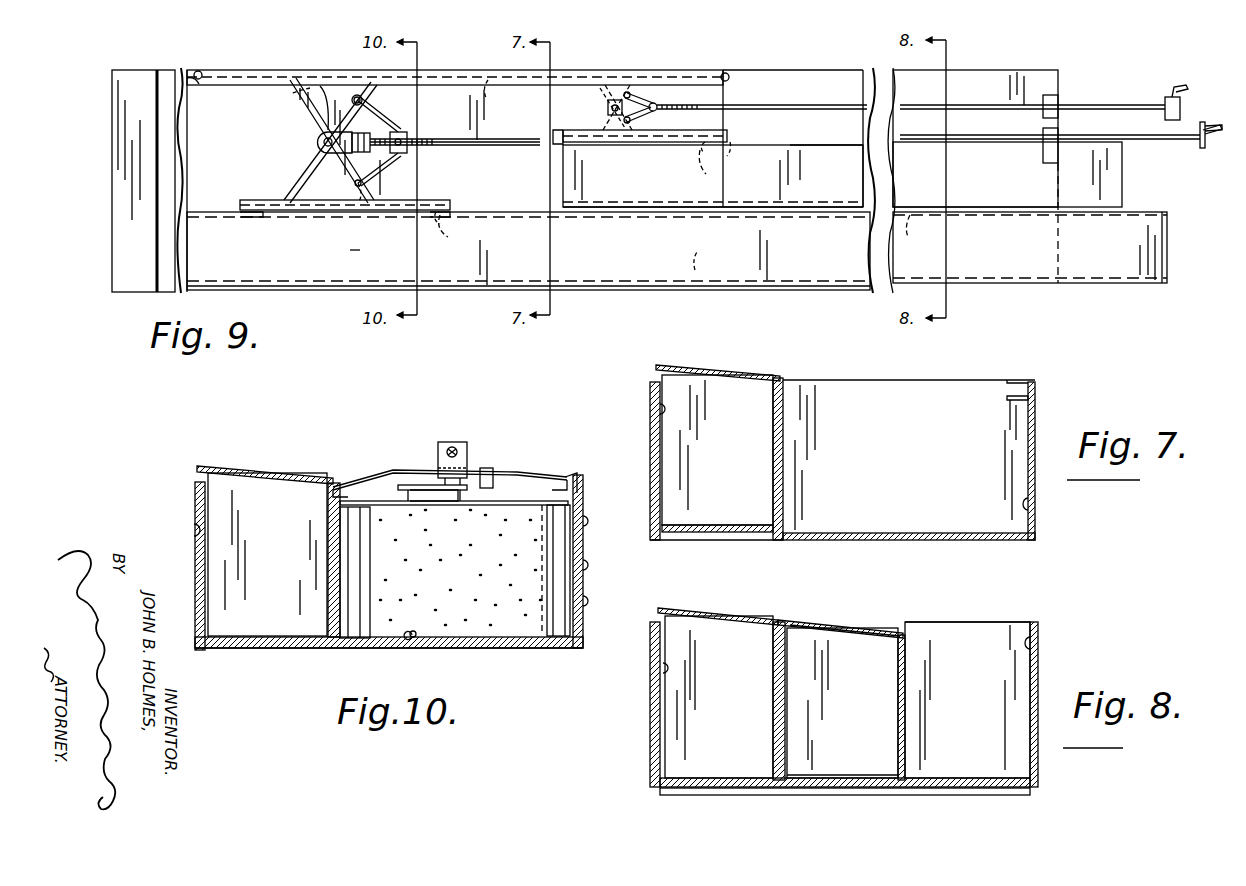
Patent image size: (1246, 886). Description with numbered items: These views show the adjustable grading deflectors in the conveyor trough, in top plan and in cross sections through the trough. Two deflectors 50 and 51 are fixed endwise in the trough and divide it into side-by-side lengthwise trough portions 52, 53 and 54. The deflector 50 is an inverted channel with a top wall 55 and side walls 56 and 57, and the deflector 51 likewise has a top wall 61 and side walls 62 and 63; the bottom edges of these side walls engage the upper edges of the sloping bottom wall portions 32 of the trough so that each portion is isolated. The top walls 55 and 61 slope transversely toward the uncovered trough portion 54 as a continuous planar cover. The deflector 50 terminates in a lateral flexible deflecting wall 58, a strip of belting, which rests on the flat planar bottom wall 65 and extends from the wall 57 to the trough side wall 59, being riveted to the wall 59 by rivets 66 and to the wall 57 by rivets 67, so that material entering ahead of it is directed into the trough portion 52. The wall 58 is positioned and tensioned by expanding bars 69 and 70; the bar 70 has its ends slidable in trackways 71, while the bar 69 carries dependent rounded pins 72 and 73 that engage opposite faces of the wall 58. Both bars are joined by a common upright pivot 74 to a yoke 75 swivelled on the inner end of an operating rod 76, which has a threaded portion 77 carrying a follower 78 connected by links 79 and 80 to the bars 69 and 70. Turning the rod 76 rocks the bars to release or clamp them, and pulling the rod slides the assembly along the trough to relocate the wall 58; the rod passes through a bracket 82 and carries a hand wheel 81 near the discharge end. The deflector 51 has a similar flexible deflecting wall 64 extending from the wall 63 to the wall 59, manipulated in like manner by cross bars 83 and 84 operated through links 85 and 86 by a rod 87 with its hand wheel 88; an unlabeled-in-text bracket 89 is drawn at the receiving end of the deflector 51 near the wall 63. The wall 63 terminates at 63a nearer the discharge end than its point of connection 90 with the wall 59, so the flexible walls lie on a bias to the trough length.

In FIG. 10, the sloping bottom wall portions 32 is at (500, 648).
In FIG. 7, the sloping bottom wall portions 32 is at (920, 538).
In FIG. 8, the sloping bottom wall portions 32 is at (850, 790).
In FIG. 9, the deflector 50 is at (810, 251).
In FIG. 10, the deflector 50 is at (275, 469).
In FIG. 7, the deflector 50 is at (748, 373).
In FIG. 8, the deflector 50 is at (706, 610).
In FIG. 9, the deflector 51 is at (615, 188).
In FIG. 8, the deflector 51 is at (820, 622).
In FIG. 10, the trough portion 52 is at (267, 554).
In FIG. 7, the trough portion 52 is at (717, 450).
In FIG. 8, the trough portion 52 is at (719, 697).
In FIG. 9, the trough portion 53 is at (1124, 180).
In FIG. 8, the trough portion 53 is at (842, 703).
In FIG. 9, the trough portion 54 is at (1065, 75).
In FIG. 8, the trough portion 54 is at (967, 700).
In FIG. 9, the top wall 55 is at (512, 243).
In FIG. 10, the top wall 55 is at (262, 467).
In FIG. 7, the top wall 55 is at (690, 367).
In FIG. 8, the top wall 55 is at (745, 618).
In FIG. 9, the side wall 56 is at (698, 258).
In FIG. 10, the side wall 56 is at (192, 528).
In FIG. 7, the side wall 56 is at (658, 409).
In FIG. 8, the side wall 56 is at (662, 668).
In FIG. 9, the side wall 57 is at (687, 236).
In FIG. 10, the side wall 57 is at (325, 568).
In FIG. 7, the side wall 57 is at (783, 436).
In FIG. 8, the side wall 57 is at (791, 667).
In FIG. 9, the flexible deflecting wall 58 is at (316, 108).
In FIG. 10, the flexible deflecting wall 58 is at (457, 571).
In FIG. 9, the side wall of the trough 59 is at (198, 73).
In FIG. 10, the side wall of the trough 59 is at (586, 598).
In FIG. 7, the side wall of the trough 59 is at (1030, 511).
In FIG. 8, the side wall of the trough 59 is at (1037, 646).
In FIG. 9, the top wall 61 is at (713, 138).
In FIG. 8, the top wall 61 is at (868, 630).
In FIG. 9, the side wall 62 is at (811, 204).
In FIG. 8, the side wall 62 is at (782, 753).
In FIG. 9, the side wall 63 is at (730, 146).
In FIG. 8, the side wall 63 is at (898, 754).
In FIG. 9, the termination of partition wall 63a is at (560, 140).
In FIG. 9, the lateral flexible deflecting wall 64 is at (593, 108).
In FIG. 10, the flat planar bottom wall 65 is at (408, 640).
In FIG. 9, the rivets 66 is at (197, 80).
In FIG. 9, the rivets 67 is at (438, 205).
In FIG. 9, the expanding bar 69 is at (327, 130).
In FIG. 10, the expanding bar 69 is at (503, 501).
In FIG. 9, the expanding bar 70 is at (301, 180).
In FIG. 10, the expanding bar 70 is at (378, 468).
In FIG. 9, the trackways 71 is at (443, 80).
In FIG. 10, the trackways 71 is at (345, 480).
In FIG. 7, the trackways 71 is at (1018, 380).
In FIG. 9, the dependent rounded pin 72 is at (308, 90).
In FIG. 10, the dependent rounded pin 72 is at (535, 616).
In FIG. 9, the dependent rounded pin 73 is at (368, 196).
In FIG. 10, the dependent rounded pin 73 is at (373, 590).
In FIG. 9, the upright pivot 74 is at (322, 140).
In FIG. 10, the upright pivot 74 is at (453, 498).
In FIG. 9, the yoke 75 is at (326, 143).
In FIG. 10, the yoke 75 is at (455, 450).
In FIG. 9, the operating rod 76 is at (502, 140).
In FIG. 10, the operating rod 76 is at (470, 452).
In FIG. 9, the threaded portion 77 is at (423, 142).
In FIG. 9, the follower 78 is at (408, 152).
In FIG. 9, the link 79 is at (381, 162).
In FIG. 10, the link 79 is at (418, 485).
In FIG. 9, the link 80 is at (378, 100).
In FIG. 10, the link 80 is at (478, 488).
In FIG. 9, the hand wheel 81 is at (1203, 148).
In FIG. 9, the bracket 82 is at (1045, 161).
In FIG. 9, the cross bar 83 is at (606, 107).
In FIG. 9, the cross bar 84 is at (644, 78).
In FIG. 9, the link 85 is at (650, 98).
In FIG. 9, the link 86 is at (650, 112).
In FIG. 9, the rod 87 is at (790, 108).
In FIG. 9, the hand wheel 88 is at (1176, 94).
In FIG. 9, the bracket 89 is at (713, 174).
In FIG. 9, the point of connection 90 is at (499, 95).